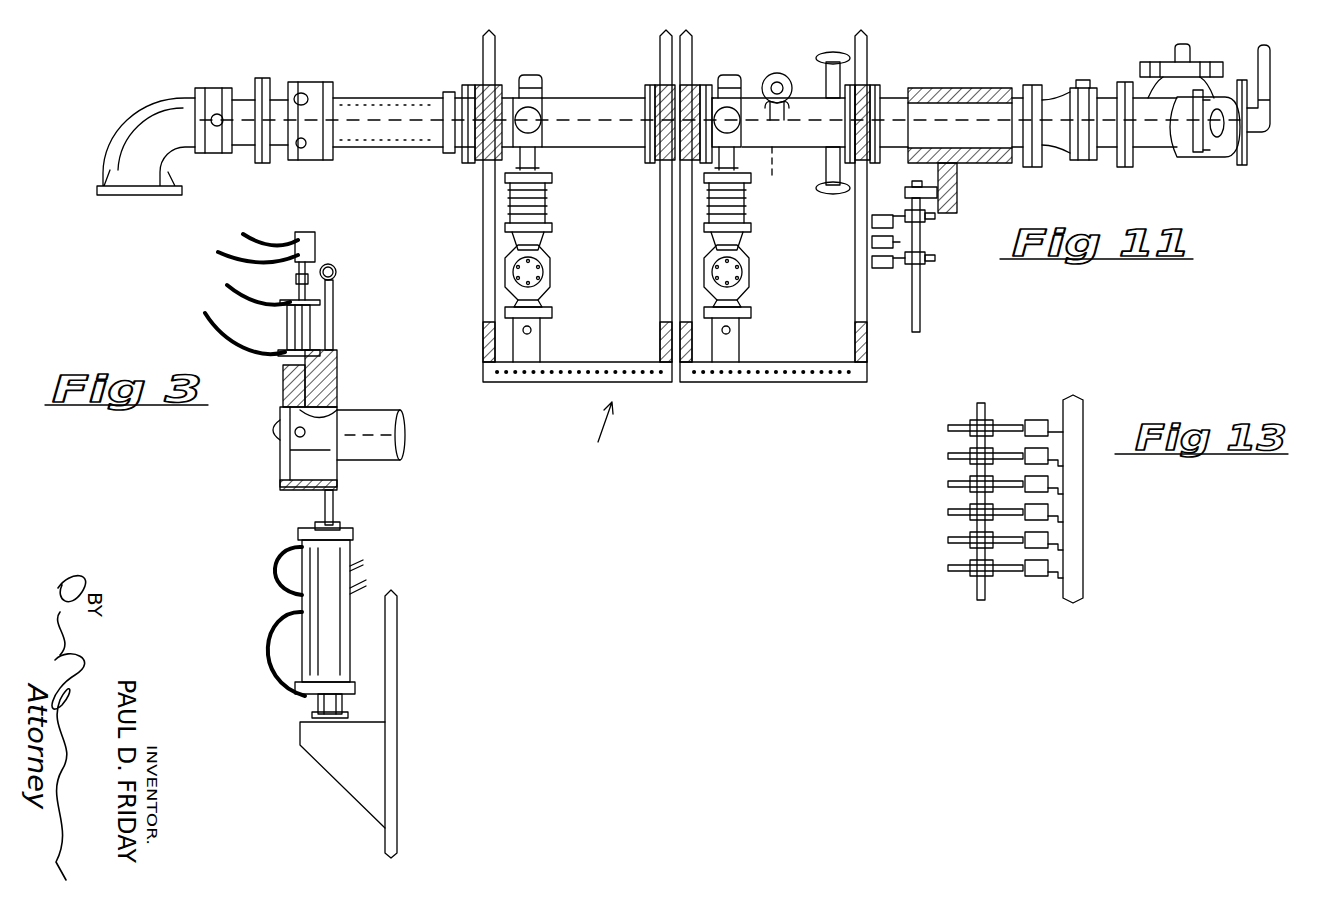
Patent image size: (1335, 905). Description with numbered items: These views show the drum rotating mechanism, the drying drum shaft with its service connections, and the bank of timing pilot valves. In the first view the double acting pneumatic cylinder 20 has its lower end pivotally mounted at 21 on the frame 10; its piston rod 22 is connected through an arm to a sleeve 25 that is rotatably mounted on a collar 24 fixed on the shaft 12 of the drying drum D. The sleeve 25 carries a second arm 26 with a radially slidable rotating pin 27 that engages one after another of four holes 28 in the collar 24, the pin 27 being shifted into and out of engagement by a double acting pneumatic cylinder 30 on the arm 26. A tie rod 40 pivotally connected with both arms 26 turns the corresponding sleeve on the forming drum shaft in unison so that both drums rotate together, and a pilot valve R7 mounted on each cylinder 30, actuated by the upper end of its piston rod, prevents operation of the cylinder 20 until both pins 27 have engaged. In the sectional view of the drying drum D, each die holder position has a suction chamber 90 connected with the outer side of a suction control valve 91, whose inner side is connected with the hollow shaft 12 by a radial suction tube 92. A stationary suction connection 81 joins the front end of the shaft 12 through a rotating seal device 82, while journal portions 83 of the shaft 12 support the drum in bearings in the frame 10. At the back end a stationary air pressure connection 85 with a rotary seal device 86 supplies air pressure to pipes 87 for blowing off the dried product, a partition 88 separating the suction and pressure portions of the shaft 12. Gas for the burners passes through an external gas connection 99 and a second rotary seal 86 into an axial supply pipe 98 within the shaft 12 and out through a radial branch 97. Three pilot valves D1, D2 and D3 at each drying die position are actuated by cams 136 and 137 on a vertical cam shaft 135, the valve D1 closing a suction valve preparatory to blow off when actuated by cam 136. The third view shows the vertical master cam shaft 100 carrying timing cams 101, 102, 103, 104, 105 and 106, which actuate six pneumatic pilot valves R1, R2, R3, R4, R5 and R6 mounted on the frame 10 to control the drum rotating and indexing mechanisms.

In FIG. 11, the frame 10 is at (960, 190).
In FIG. 3, the frame 10 is at (397, 636).
In FIG. 13, the frame 10 is at (1083, 582).
In FIG. 11, the shaft 12 is at (608, 95).
In FIG. 3, the shaft 12 is at (385, 428).
In FIG. 3, the double acting pneumatic cylinder 20 is at (300, 596).
In FIG. 3, the pivotal mounting 21 is at (312, 707).
In FIG. 3, the piston rod 22 is at (333, 506).
In FIG. 11, the collar 24 is at (310, 82).
In FIG. 3, the collar 24 is at (330, 394).
In FIG. 3, the sleeve 25 is at (337, 366).
In FIG. 3, the arm 26 is at (333, 306).
In FIG. 3, the rotating pin 27 is at (283, 375).
In FIG. 11, the holes 28 is at (305, 150).
In FIG. 3, the holes 28 is at (290, 428).
In FIG. 3, the double acting pneumatic cylinder 30 is at (287, 330).
In FIG. 3, the tie rod 40 is at (337, 272).
In FIG. 11, the stationary suction connection 81 is at (125, 196).
In FIG. 11, the rotating seal device 82 is at (215, 88).
In FIG. 11, the journal portions 83 is at (398, 98).
In FIG. 11, the stationary air pressure connection 85 is at (1175, 50).
In FIG. 11, the rotary seal device 86 is at (1068, 92).
In FIG. 11, the pipes 87 is at (828, 55).
In FIG. 11, the partition 88 is at (775, 176).
In FIG. 11, the suction chamber 90 is at (603, 358).
In FIG. 11, the suction control valve 91 is at (552, 272).
In FIG. 11, the radial suction tube 92 is at (532, 98).
In FIG. 11, the radial branch 97 is at (770, 78).
In FIG. 11, the axial supply pipe 98 is at (1153, 150).
In FIG. 11, the external gas connection 99 is at (1272, 74).
In FIG. 13, the vertical master cam shaft 100 is at (975, 592).
In FIG. 13, the timing cam 101 is at (948, 428).
In FIG. 13, the timing cam 102 is at (948, 456).
In FIG. 13, the timing cam 103 is at (948, 484).
In FIG. 13, the timing cam 104 is at (948, 512).
In FIG. 13, the timing cam 105 is at (948, 540).
In FIG. 13, the timing cam 106 is at (948, 568).
In FIG. 11, the vertical cam shaft 135 is at (922, 318).
In FIG. 11, the cam 136 is at (937, 216).
In FIG. 11, the cam 137 is at (937, 258).
In FIG. 13, the pneumatic pilot valve R1 is at (1038, 420).
In FIG. 13, the pneumatic pilot valve R2 is at (1065, 460).
In FIG. 13, the pneumatic pilot valve R3 is at (1065, 488).
In FIG. 13, the pneumatic pilot valve R4 is at (1065, 516).
In FIG. 13, the pneumatic pilot valve R5 is at (1065, 544).
In FIG. 13, the pneumatic pilot valve R6 is at (1032, 578).
In FIG. 3, the pilot valve R7 is at (315, 240).
In FIG. 11, the drying drum D is at (594, 445).
In FIG. 11, the pilot valve D1 is at (872, 222).
In FIG. 11, the pilot valve D2 is at (872, 243).
In FIG. 11, the pilot valve D3 is at (872, 263).